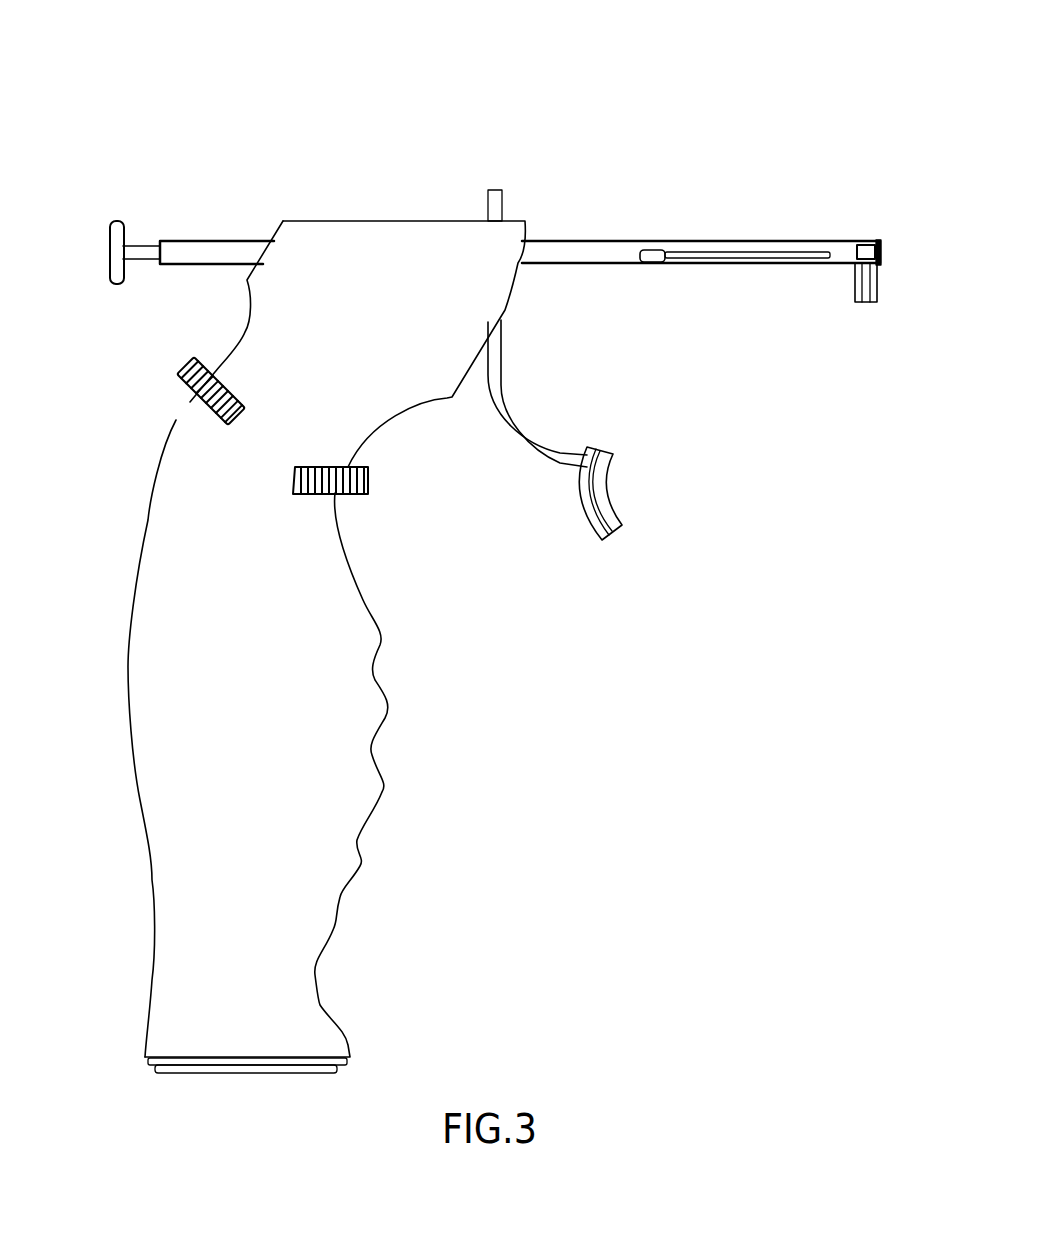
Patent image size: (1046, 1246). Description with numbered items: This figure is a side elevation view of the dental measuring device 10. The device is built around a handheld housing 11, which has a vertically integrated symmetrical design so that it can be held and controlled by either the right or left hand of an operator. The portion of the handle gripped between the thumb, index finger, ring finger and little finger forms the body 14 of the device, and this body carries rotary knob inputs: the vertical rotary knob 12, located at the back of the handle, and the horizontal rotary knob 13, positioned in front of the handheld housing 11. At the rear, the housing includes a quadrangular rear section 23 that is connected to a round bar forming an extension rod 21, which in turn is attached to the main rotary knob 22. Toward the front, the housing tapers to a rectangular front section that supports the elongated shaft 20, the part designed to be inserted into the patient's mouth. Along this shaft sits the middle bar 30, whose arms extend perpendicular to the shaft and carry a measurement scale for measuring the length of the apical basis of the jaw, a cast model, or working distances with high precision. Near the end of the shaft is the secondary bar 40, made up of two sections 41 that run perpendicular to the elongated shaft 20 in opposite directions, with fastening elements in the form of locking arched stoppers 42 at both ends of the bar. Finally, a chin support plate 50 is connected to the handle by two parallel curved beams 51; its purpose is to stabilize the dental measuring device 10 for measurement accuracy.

The dental measuring device 10 is at (298, 165).
The handheld housing 11 is at (358, 853).
The vertical rotary knob 12 is at (177, 383).
The horizontal rotary knob 13 is at (370, 480).
The body 14 is at (177, 690).
The elongated shaft 20 is at (590, 241).
The extension rod 21 is at (143, 245).
The main rotary knob 22 is at (108, 237).
The quadrangular rear section 23 is at (216, 240).
The middle bar 30 is at (658, 263).
The secondary bar 40 is at (878, 240).
The sections 41 is at (884, 250).
The locking arched stoppers 42 is at (875, 295).
The chin support plate 50 is at (615, 512).
The parallel curved beams 51 is at (504, 374).